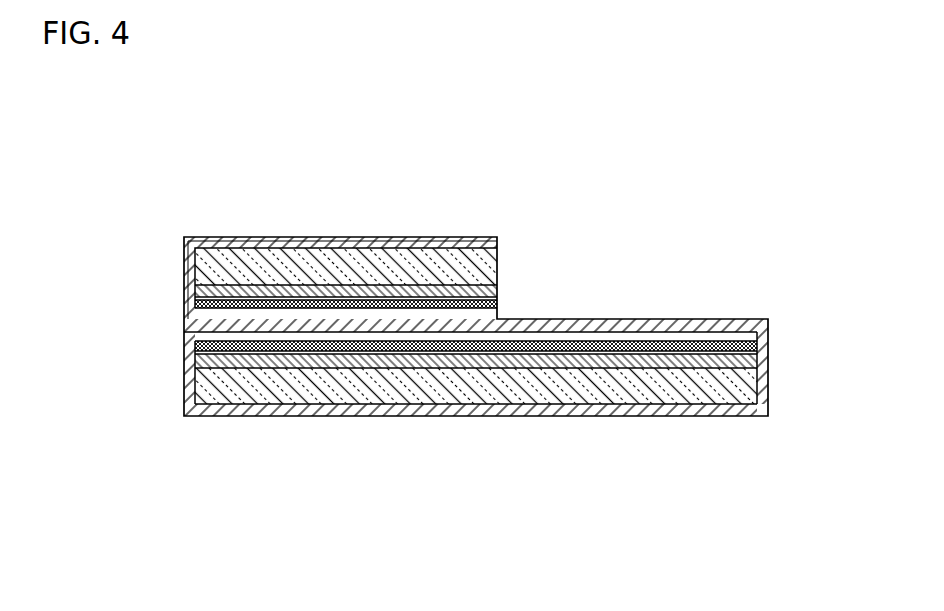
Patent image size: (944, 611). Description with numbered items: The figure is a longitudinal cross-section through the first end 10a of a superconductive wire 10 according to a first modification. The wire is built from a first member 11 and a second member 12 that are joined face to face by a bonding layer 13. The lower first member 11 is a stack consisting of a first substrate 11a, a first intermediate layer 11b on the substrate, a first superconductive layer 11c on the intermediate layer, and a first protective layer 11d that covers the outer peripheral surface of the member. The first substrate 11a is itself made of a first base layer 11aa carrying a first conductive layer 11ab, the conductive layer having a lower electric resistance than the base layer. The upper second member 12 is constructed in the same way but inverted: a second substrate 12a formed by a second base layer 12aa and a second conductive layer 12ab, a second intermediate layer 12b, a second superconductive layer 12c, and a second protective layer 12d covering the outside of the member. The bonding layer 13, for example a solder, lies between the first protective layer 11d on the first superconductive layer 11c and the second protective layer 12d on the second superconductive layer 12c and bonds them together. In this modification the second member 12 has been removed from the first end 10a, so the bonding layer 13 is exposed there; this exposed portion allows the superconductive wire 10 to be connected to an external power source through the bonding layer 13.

The superconductive wire 10 is at (287, 438).
The first end 10a is at (770, 218).
The first member 11 is at (476, 436).
The first substrate 11a is at (470, 405).
The first base layer 11aa is at (640, 398).
The first conductive layer 11ab is at (646, 362).
The first intermediate layer 11b is at (605, 360).
The first superconductive layer 11c is at (535, 348).
The first protective layer 11d is at (465, 342).
The second member 12 is at (346, 224).
The second substrate 12a is at (328, 243).
The second base layer 12aa is at (346, 253).
The second conductive layer 12ab is at (187, 278).
The second intermediate layer 12b is at (252, 292).
The second superconductive layer 12c is at (328, 302).
The second protective layer 12d is at (200, 163).
The bonding layer 13 is at (770, 328).